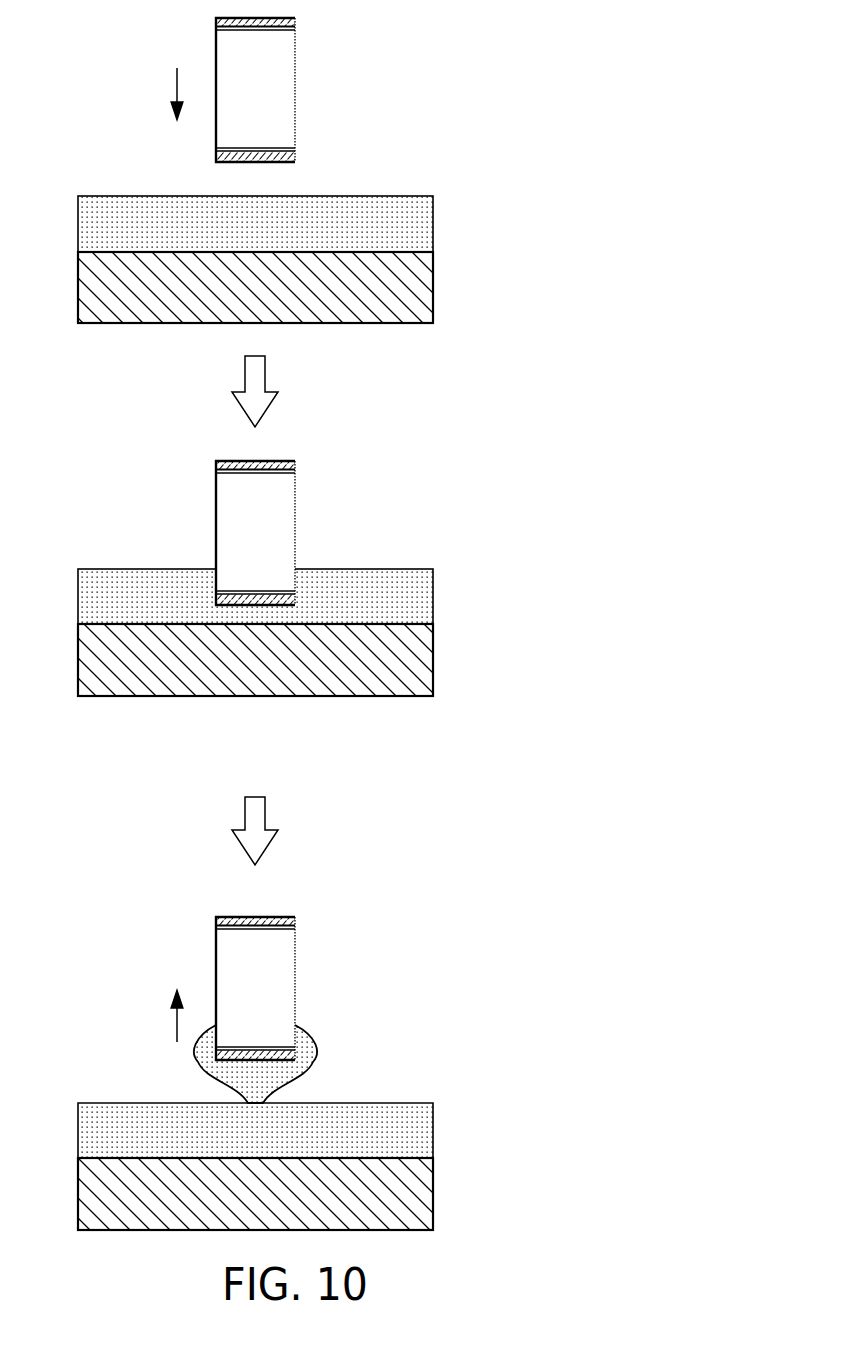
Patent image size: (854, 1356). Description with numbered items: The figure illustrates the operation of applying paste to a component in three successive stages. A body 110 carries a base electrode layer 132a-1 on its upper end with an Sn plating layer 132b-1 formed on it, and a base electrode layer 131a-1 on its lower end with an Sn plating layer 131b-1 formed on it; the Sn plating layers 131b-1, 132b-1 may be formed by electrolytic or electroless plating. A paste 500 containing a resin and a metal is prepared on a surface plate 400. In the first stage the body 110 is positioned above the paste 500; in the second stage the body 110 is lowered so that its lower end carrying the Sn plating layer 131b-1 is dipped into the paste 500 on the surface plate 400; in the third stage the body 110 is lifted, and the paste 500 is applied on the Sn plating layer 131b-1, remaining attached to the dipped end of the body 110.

The body 110 is at (275, 63).
The Sn plating layer 132b-1 is at (216, 22).
The base electrode layer 132a-1 is at (216, 30).
The base electrode layer 131a-1 is at (216, 150).
The Sn plating layer 131b-1 is at (216, 159).
The paste 500 is at (422, 228).
The surface plate 400 is at (422, 283).